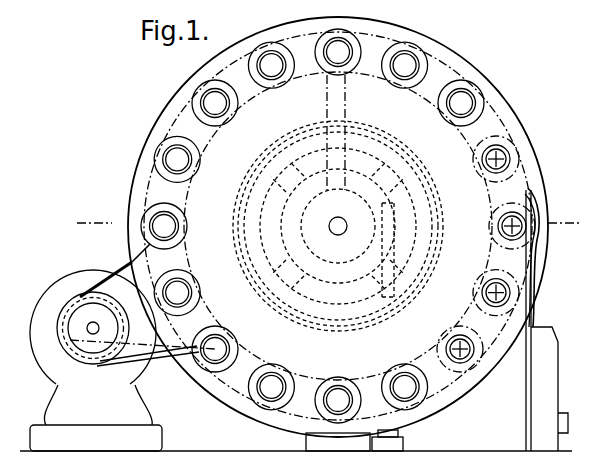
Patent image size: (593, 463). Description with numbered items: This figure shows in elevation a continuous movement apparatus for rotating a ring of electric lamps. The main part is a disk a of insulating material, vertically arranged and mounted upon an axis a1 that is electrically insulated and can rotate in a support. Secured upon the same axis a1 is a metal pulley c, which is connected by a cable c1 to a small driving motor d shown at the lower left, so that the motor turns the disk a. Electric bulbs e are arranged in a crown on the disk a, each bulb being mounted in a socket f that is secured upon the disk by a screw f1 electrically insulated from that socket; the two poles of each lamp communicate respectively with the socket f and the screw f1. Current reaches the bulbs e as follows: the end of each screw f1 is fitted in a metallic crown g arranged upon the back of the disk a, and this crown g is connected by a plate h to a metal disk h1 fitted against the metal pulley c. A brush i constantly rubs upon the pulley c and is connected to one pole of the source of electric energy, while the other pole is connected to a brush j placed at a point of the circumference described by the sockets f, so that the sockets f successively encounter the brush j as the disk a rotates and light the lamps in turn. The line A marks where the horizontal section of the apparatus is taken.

The disk a is at (462, 72).
The axis a1 is at (337, 219).
The metal pulley c is at (246, 240).
The cable c1 is at (127, 262).
The driving motor d is at (96, 360).
The electric bulbs e is at (220, 124).
The socket f is at (489, 280).
The screw f1 is at (484, 160).
The metallic crown g is at (330, 386).
The plate h is at (345, 99).
The metal disk h1 is at (380, 231).
The brush i is at (382, 347).
The brush j is at (543, 309).
The section line A is at (329, 212).